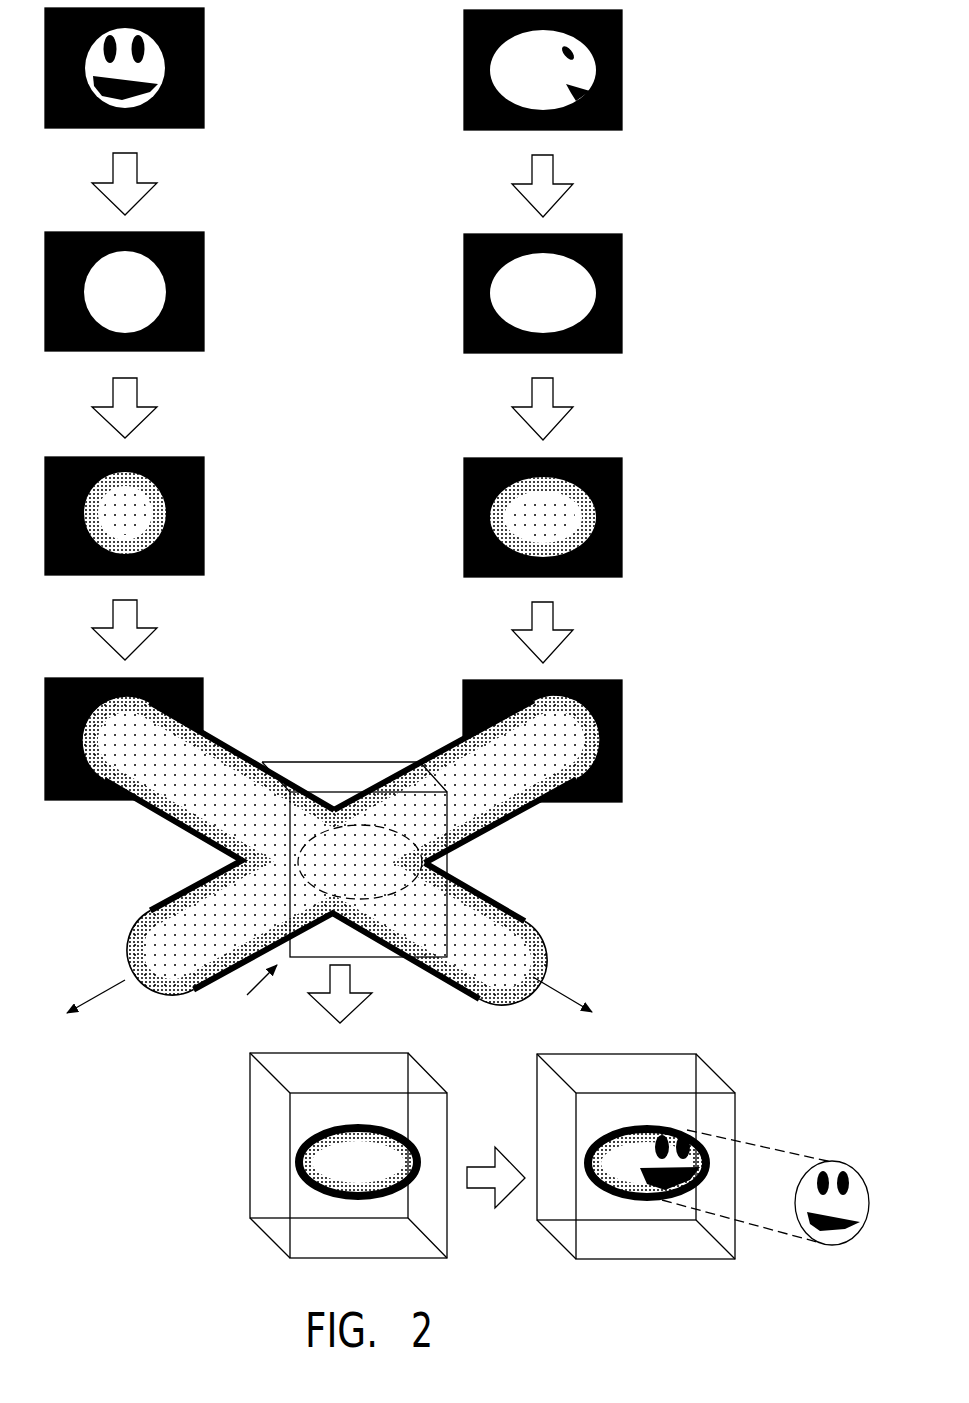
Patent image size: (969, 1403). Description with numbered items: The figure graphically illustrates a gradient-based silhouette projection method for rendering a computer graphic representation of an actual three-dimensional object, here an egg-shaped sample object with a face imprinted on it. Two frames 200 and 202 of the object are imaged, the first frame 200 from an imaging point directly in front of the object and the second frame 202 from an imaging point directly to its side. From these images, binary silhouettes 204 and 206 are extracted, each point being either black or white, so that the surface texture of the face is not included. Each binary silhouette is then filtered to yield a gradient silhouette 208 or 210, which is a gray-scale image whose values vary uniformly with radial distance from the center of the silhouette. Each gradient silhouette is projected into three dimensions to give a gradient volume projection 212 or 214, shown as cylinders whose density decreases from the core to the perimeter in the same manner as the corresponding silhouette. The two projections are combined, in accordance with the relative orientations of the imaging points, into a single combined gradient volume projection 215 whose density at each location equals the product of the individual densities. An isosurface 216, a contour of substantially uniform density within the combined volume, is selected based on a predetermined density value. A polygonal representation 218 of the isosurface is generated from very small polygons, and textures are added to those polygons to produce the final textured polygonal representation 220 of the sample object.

The first frame 200 is at (205, 100).
The second frame 202 is at (463, 100).
The binary silhouette 204 is at (205, 324).
The binary silhouette 206 is at (463, 325).
The gradient silhouette 208 is at (205, 545).
The gradient silhouette 210 is at (463, 548).
The gradient volume projection 212 is at (477, 915).
The gradient volume projection 214 is at (510, 798).
The combined gradient volume projection 215 is at (246, 997).
The isosurface 216 is at (387, 897).
The polygonal representation of the isosurface 218 is at (305, 1182).
The final polygonal representation with texture 220 is at (618, 1198).